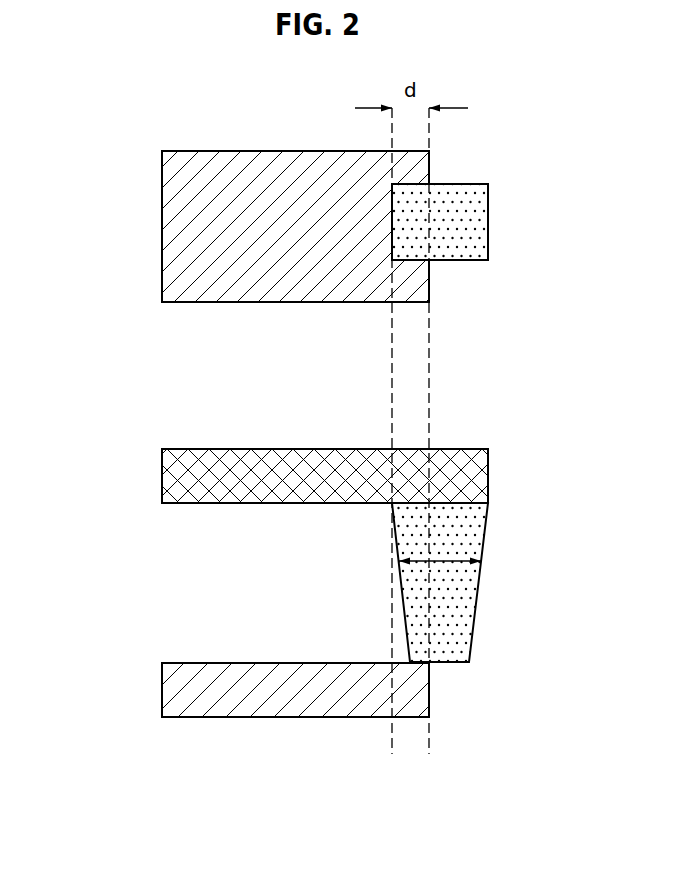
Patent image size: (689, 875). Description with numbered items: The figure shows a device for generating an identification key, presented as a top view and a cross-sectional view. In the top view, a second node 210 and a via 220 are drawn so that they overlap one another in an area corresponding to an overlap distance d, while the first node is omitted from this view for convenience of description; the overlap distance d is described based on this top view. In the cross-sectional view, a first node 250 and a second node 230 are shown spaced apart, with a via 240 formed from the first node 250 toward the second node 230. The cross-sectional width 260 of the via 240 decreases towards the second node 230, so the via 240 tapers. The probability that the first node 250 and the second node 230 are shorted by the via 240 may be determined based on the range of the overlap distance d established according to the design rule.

The second node 210 is at (162, 225).
The via 220 is at (488, 219).
The second node 230 is at (162, 688).
The via 240 is at (480, 575).
The first node 250 is at (162, 472).
The cross-sectional width 260 is at (457, 557).